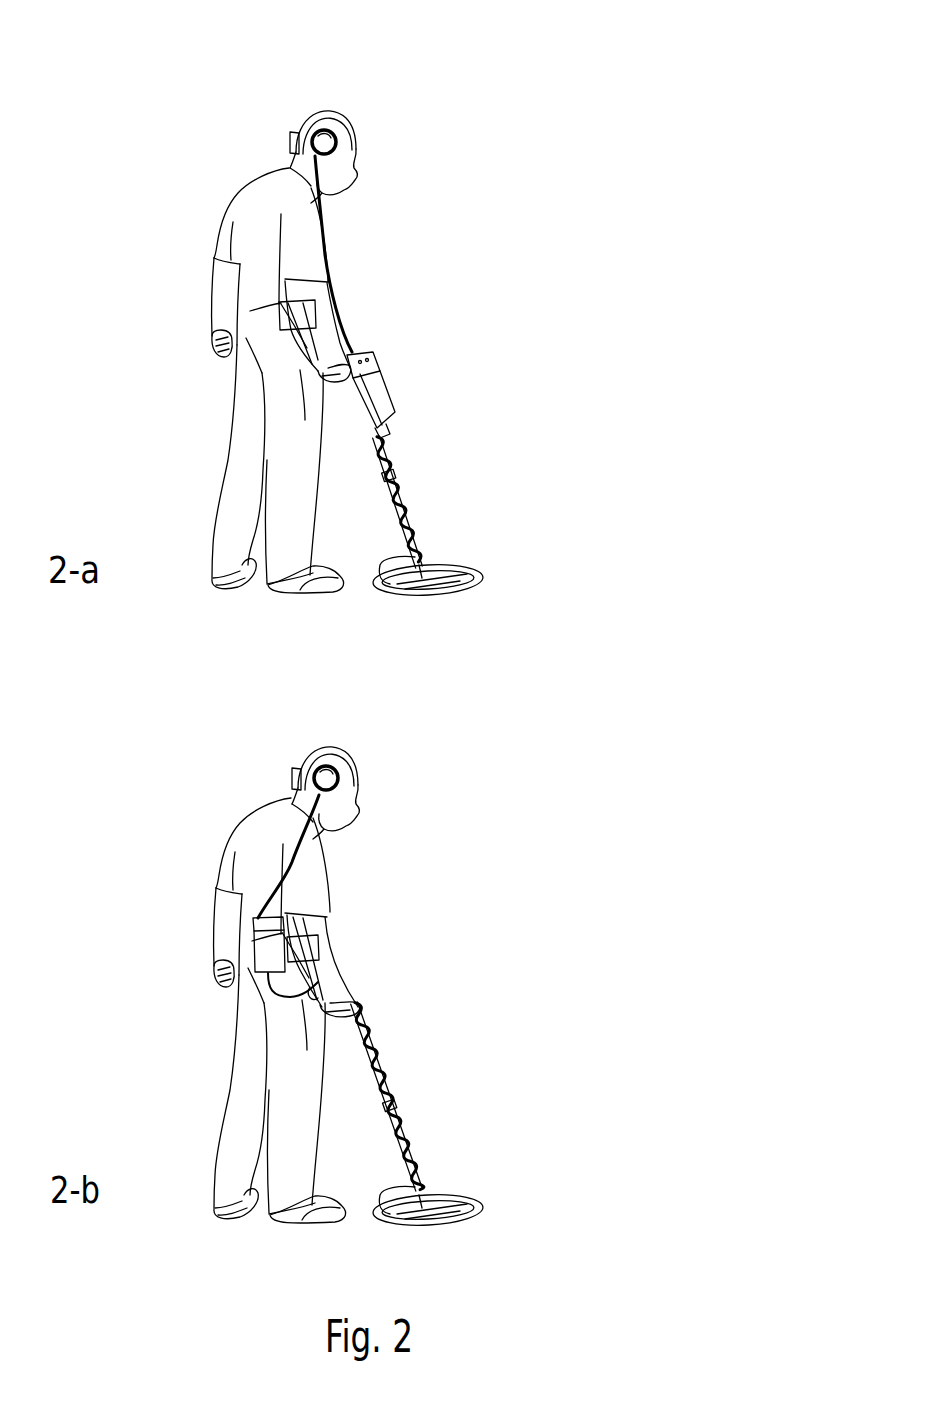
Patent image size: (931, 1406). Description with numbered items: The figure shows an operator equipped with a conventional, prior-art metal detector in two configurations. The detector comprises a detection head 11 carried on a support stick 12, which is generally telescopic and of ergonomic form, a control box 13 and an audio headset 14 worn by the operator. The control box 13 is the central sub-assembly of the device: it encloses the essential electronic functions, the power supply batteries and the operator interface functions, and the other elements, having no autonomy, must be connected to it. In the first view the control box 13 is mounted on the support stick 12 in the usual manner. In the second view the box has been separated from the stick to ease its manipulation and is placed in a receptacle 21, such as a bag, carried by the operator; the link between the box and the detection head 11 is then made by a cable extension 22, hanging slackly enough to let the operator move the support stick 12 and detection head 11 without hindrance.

The detection head 11 is at (468, 564).
The support stick 12 is at (403, 513).
The control box 13 is at (380, 384).
The audio headset 14 is at (325, 127).
The receptacle 21 is at (267, 947).
The cable extension 22 is at (333, 290).